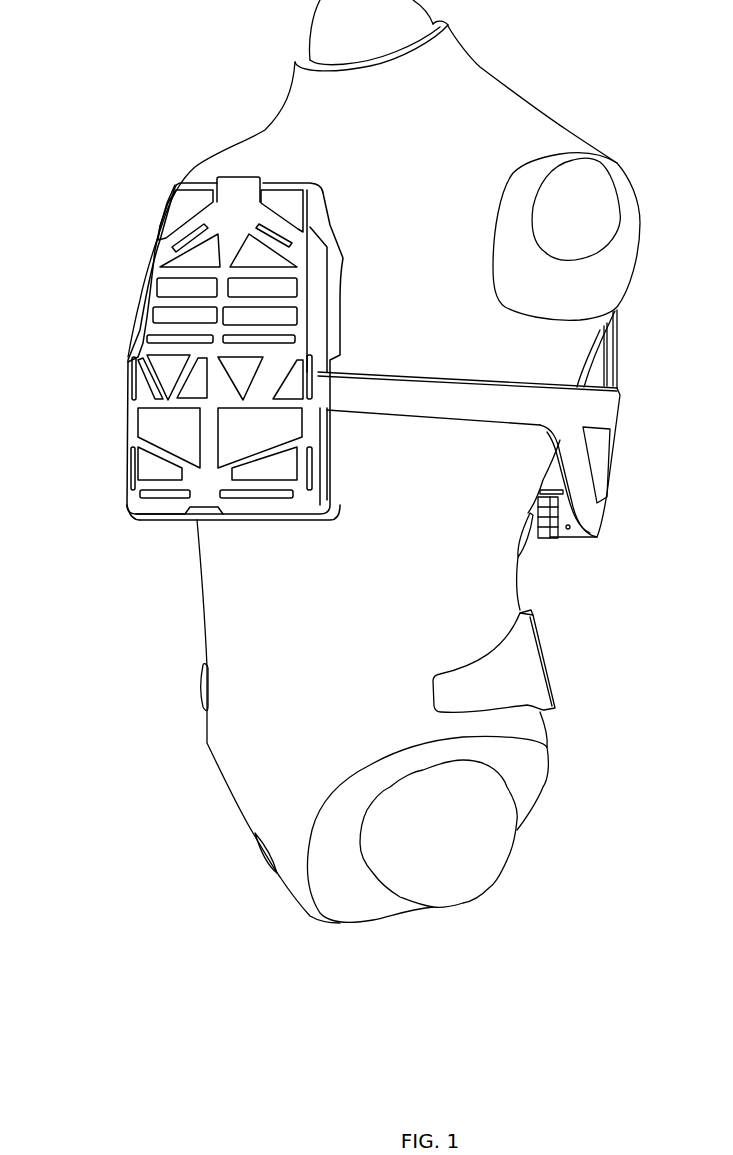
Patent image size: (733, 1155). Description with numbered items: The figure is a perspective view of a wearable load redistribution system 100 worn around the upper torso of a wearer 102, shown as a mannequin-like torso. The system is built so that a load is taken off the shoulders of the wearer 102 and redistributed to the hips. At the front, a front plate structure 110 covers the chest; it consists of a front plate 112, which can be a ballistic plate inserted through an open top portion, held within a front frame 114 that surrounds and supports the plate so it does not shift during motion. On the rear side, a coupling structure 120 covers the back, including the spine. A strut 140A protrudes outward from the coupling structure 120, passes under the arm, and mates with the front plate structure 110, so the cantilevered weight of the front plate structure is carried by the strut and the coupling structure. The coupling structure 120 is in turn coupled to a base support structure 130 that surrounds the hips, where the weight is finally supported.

The wearable load redistribution system 100 is at (80, 284).
The wearer 102 is at (540, 105).
The front plate structure 110 is at (198, 324).
The front plate 112 is at (283, 198).
The front frame 114 is at (130, 427).
The coupling structure 120 is at (617, 336).
The base support structure 130 is at (547, 663).
The strap 140A is at (483, 406).